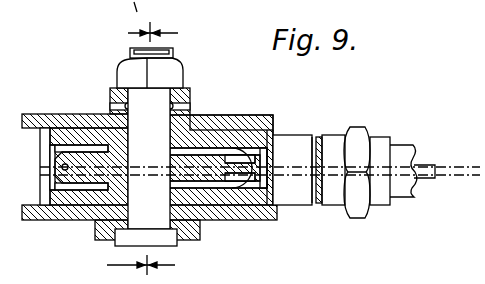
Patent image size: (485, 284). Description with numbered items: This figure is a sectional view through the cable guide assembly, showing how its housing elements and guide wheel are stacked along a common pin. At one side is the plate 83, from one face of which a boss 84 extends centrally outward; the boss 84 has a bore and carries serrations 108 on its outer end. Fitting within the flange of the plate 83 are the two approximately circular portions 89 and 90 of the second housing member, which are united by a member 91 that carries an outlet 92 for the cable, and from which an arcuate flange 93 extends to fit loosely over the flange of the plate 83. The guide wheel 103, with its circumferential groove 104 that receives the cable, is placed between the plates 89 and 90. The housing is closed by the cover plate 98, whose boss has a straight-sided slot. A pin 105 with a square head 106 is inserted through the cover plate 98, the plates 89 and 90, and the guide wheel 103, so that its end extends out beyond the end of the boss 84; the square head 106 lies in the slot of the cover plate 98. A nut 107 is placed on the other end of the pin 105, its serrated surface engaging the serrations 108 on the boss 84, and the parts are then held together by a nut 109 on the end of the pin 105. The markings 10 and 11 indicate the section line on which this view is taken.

The section line 10 is at (151, 143).
The section line 11 is at (260, 149).
The plate 83 is at (60, 118).
The boss 84 is at (65, 144).
The circular portion 89 is at (226, 153).
The circular portion 90 is at (205, 137).
The member 91 is at (255, 138).
The outlet 92 is at (298, 193).
The arcuate flange 93 is at (267, 150).
The cover plate 98 is at (65, 212).
The guide wheel 103 is at (213, 155).
The circumferential groove 104 is at (62, 167).
The pin 105 is at (137, 202).
The square head 106 is at (118, 242).
The nut 107 is at (190, 100).
The serrations 108 is at (110, 107).
The nut 109 is at (173, 72).